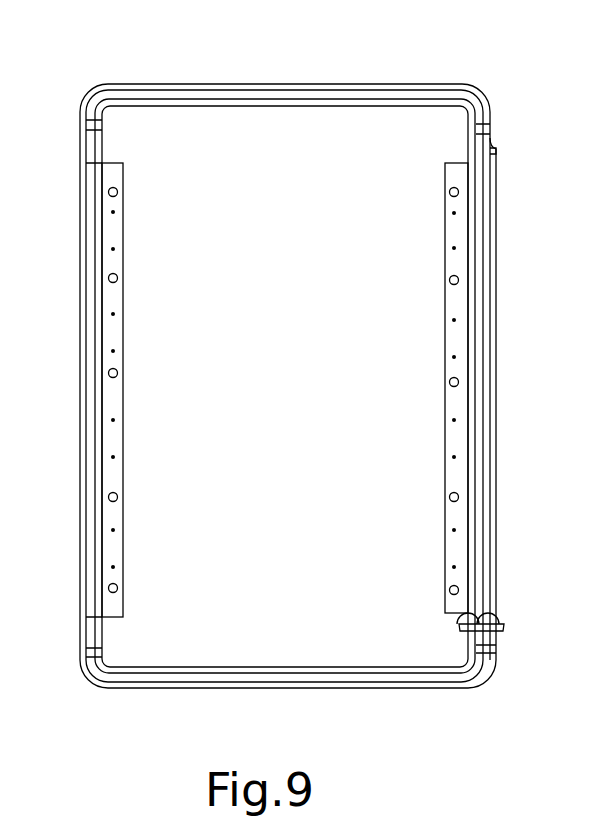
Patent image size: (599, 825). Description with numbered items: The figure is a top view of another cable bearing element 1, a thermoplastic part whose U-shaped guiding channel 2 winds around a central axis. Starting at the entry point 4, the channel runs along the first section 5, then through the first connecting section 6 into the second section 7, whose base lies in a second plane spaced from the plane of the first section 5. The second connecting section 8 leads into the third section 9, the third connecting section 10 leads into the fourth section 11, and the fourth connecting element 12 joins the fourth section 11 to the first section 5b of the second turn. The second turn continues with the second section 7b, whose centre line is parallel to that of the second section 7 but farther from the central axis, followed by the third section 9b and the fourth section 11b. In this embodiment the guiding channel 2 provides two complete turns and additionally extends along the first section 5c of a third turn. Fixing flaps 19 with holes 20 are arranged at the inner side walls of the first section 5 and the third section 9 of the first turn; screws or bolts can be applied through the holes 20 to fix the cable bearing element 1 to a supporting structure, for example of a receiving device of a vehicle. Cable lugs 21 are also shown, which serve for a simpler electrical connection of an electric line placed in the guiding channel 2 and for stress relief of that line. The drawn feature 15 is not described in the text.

The cable bearing element 1 is at (95, 712).
The guiding channel 2 is at (470, 419).
The entry point 4 is at (470, 613).
The first section 5 is at (466, 540).
The first section of a second turn 5b is at (486, 556).
The first section of a third turn 5c is at (494, 592).
The first connecting section 6 is at (478, 100).
The second section 7 is at (354, 101).
The second section of the second turn 7b is at (408, 93).
The second connecting section 8 is at (86, 92).
The third section 9 is at (93, 316).
The third section of the second turn 9b is at (92, 360).
The third connecting section 10 is at (87, 673).
The fourth section 11 is at (186, 668).
The fourth section of the second turn 11b is at (190, 690).
The fourth connecting element 12 is at (490, 677).
The stop lug 15 is at (497, 152).
The fixing flaps 19 is at (113, 233).
The hole 20 is at (118, 190).
The cable lugs 21 is at (459, 628).